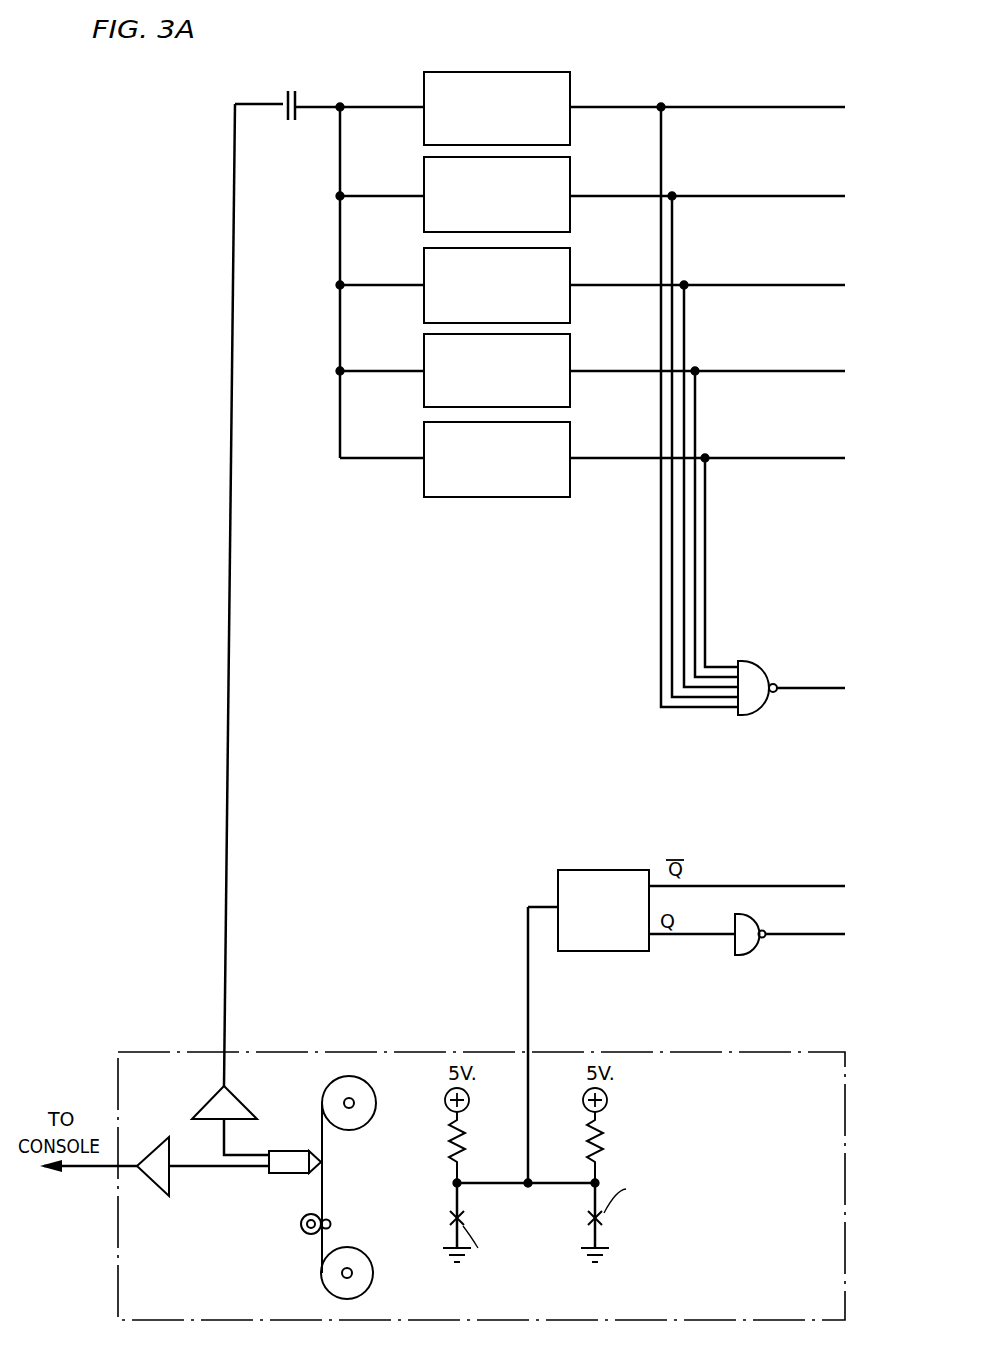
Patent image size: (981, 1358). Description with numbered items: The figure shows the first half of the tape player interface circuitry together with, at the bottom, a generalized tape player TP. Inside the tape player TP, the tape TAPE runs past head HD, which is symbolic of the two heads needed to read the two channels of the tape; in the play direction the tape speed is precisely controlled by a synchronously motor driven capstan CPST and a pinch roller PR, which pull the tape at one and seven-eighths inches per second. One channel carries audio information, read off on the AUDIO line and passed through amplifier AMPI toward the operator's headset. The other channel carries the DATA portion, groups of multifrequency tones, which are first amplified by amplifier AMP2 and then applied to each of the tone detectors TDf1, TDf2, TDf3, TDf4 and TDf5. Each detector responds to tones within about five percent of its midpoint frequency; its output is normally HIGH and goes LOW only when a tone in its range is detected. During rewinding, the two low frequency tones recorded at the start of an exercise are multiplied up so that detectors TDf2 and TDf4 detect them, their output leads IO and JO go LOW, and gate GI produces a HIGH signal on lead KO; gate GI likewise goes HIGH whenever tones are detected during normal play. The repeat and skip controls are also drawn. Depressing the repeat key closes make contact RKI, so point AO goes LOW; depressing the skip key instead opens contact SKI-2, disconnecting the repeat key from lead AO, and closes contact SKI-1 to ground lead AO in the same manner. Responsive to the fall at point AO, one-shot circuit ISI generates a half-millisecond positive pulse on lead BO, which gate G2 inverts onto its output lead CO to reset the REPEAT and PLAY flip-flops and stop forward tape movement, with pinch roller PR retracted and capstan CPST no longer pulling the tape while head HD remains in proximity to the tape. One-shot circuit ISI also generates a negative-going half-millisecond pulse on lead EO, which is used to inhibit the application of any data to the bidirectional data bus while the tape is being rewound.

The tone detector TDf1 is at (424, 77).
The tone detector TDf2 is at (424, 170).
The tone detector TDf3 is at (424, 260).
The tone detector TDf4 is at (424, 345).
The tone detector TDf5 is at (424, 434).
The lead IO is at (600, 196).
The lead JO is at (598, 371).
The gate GI is at (752, 661).
The lead KO is at (793, 688).
The one-shot circuit ISI is at (575, 870).
The lead EO is at (729, 886).
The lead BO is at (684, 934).
The gate G2 is at (745, 955).
The gate G2 output line CO is at (784, 934).
The tape player TP is at (418, 1052).
The amplifier AMP2 is at (208, 1102).
The amplifier AMPI is at (157, 1190).
The data channel DATA is at (255, 1152).
The audio channel AUDIO is at (190, 1169).
The head HD is at (280, 1174).
The tape TAPE is at (325, 1136).
The pinch roller PR is at (302, 1230).
The capstan CPST is at (331, 1222).
The skip key contact SKI-2 is at (491, 1195).
The point AO is at (526, 1185).
The make contact RKI is at (498, 1237).
The skip key contact SKI-1 is at (604, 1218).